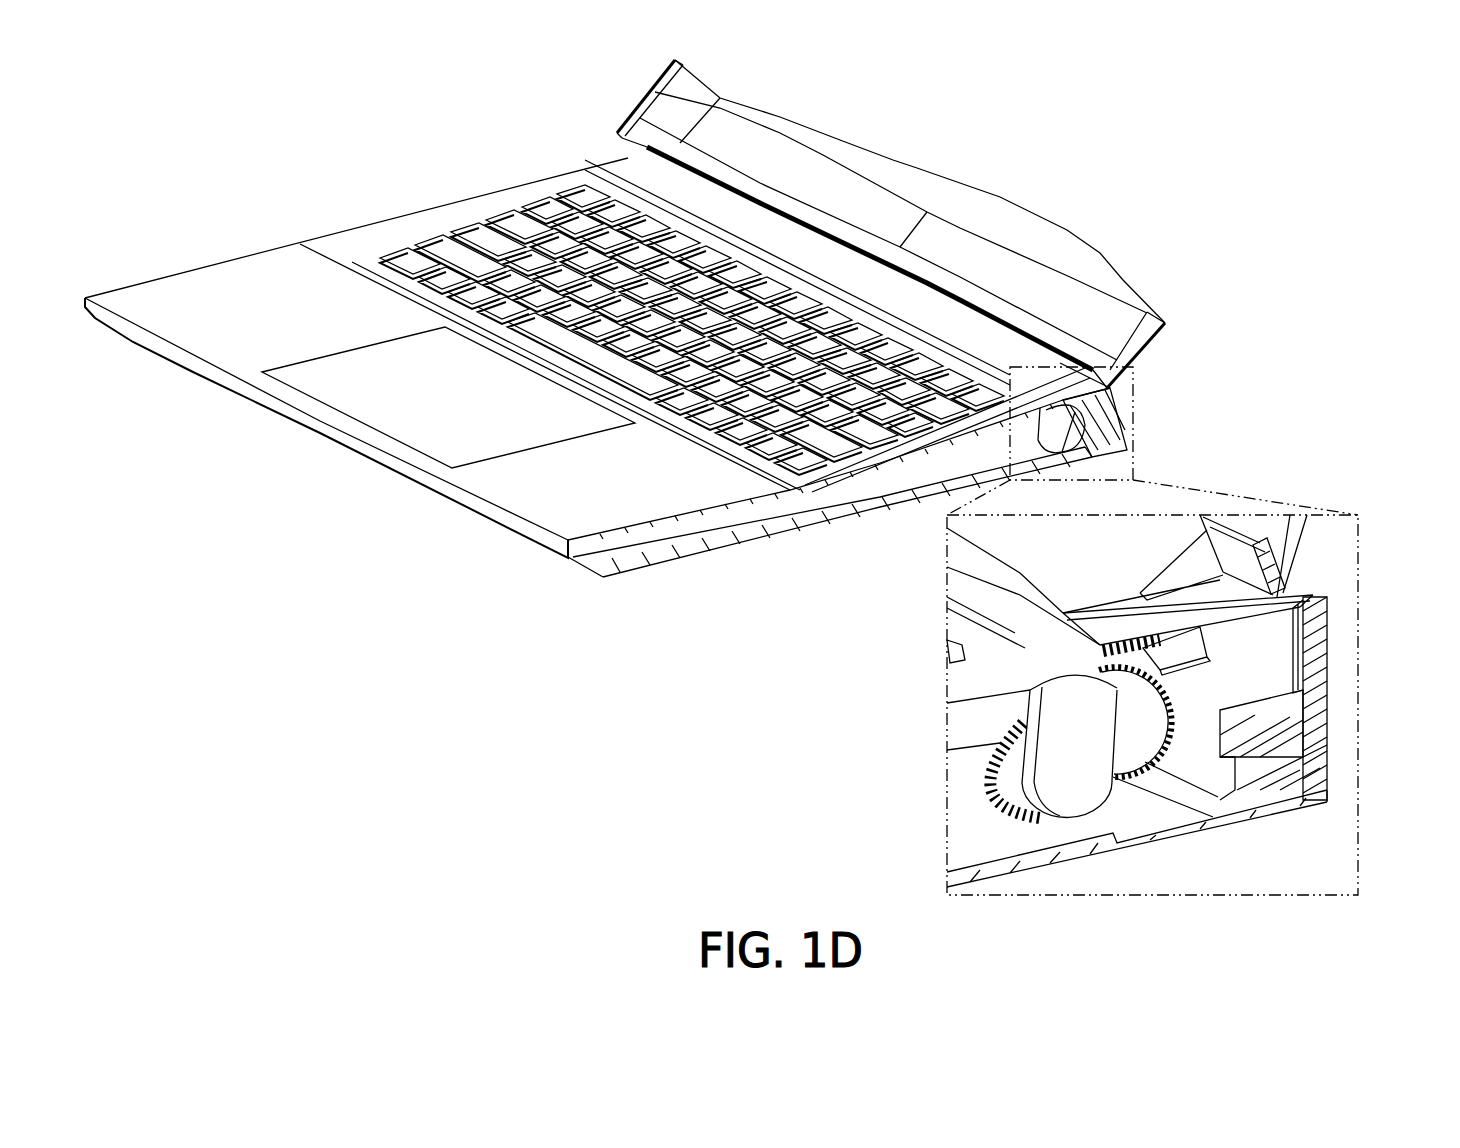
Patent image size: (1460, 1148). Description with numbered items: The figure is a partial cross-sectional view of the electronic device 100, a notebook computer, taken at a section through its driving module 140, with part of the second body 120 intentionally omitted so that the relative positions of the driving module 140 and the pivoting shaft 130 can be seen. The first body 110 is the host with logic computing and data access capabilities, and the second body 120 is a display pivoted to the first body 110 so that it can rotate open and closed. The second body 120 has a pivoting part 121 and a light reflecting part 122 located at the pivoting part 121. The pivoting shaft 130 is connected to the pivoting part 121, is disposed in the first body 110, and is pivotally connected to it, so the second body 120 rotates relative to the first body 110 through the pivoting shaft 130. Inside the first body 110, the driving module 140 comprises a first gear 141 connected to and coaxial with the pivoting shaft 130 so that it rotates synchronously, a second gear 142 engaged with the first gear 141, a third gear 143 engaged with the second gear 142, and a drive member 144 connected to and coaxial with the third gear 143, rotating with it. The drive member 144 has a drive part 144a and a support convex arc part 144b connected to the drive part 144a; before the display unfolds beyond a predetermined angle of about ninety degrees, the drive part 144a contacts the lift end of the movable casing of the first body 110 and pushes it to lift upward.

The electronic device 100 is at (129, 607).
The first body 110 is at (262, 434).
The second body 120 is at (618, 96).
The pivoting part 121 is at (1213, 558).
The light reflecting part 122 is at (650, 183).
The pivoting shaft 130 is at (1182, 647).
The driving module 140 is at (745, 712).
The first gear 141 is at (1140, 636).
The second gear 142 is at (1139, 742).
The third gear 143 is at (997, 786).
The drive member 144 is at (1060, 806).
The drive part 144a is at (1245, 706).
The support convex arc part 144b is at (947, 643).